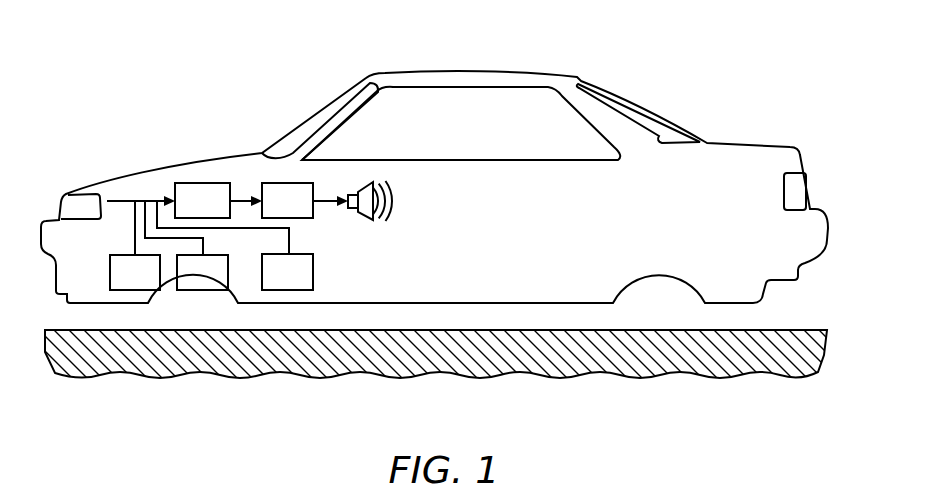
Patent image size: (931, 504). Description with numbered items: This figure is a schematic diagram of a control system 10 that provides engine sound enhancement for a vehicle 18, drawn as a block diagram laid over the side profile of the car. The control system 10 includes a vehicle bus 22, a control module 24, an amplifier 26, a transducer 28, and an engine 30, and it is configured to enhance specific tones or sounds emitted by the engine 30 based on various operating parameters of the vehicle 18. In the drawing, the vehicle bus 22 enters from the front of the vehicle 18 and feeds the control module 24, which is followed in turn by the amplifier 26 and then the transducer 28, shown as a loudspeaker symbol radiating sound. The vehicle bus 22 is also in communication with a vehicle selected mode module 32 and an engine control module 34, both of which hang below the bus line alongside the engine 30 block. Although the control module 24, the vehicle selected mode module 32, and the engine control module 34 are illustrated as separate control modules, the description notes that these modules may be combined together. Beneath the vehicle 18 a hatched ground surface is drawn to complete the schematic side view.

The control system 10 is at (318, 233).
The vehicle 18 is at (513, 71).
The vehicle bus 22 is at (127, 200).
The control module 24 is at (218, 200).
The amplifier 26 is at (305, 200).
The transducer 28 is at (352, 194).
The engine 30 is at (287, 272).
The vehicle selected mode module 32 is at (135, 272).
The engine control module 34 is at (202, 272).